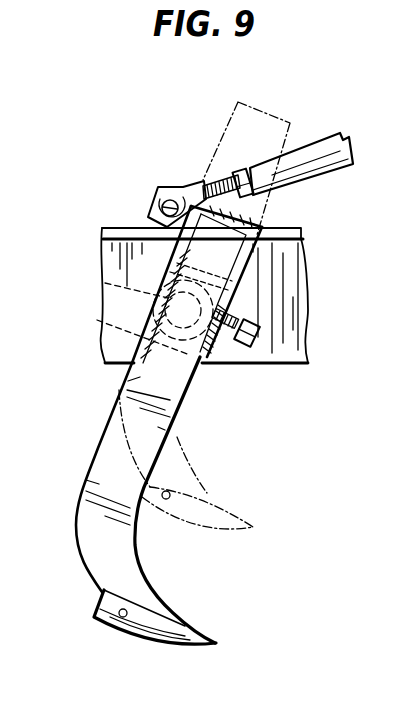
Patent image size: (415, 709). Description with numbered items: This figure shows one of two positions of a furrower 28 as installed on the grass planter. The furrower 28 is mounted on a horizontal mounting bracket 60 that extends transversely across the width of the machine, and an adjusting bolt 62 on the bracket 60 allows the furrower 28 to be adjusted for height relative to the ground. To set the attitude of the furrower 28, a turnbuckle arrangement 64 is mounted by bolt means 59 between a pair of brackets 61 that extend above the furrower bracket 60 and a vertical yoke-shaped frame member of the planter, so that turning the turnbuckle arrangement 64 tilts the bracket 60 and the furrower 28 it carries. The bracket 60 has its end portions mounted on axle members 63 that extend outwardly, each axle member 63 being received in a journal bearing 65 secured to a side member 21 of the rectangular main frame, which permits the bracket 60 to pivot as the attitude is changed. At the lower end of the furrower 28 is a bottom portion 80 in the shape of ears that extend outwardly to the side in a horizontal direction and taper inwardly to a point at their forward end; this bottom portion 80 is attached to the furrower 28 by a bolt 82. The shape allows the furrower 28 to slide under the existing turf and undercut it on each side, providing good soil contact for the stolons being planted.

The side member 21 is at (141, 254).
The furrower 28 is at (233, 140).
The bolt means 59 is at (162, 197).
The mounting bracket 60 is at (213, 362).
The brackets 61 is at (245, 214).
The adjusting bolt 62 is at (255, 346).
The axle member 63 is at (158, 303).
The turnbuckle arrangement 64 is at (320, 147).
The journal bearing 65 is at (128, 331).
The bottom portion 80 is at (220, 513).
The bolt 82 is at (100, 601).